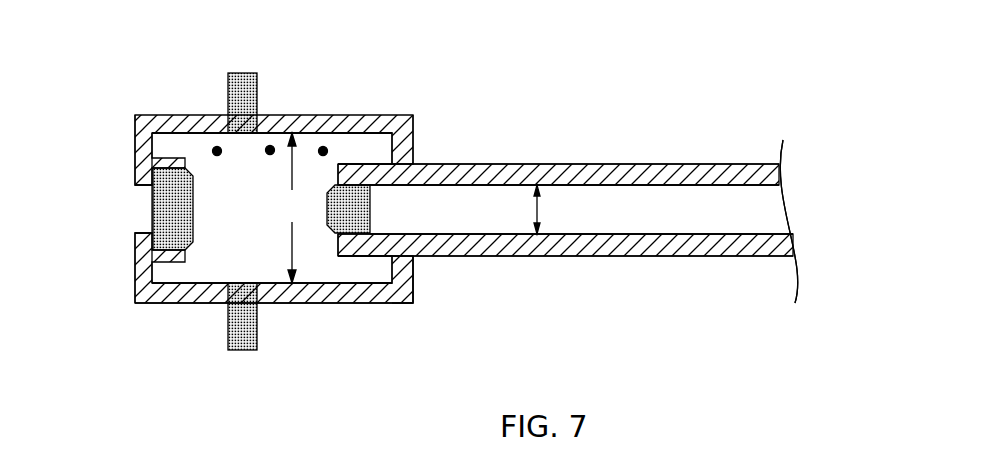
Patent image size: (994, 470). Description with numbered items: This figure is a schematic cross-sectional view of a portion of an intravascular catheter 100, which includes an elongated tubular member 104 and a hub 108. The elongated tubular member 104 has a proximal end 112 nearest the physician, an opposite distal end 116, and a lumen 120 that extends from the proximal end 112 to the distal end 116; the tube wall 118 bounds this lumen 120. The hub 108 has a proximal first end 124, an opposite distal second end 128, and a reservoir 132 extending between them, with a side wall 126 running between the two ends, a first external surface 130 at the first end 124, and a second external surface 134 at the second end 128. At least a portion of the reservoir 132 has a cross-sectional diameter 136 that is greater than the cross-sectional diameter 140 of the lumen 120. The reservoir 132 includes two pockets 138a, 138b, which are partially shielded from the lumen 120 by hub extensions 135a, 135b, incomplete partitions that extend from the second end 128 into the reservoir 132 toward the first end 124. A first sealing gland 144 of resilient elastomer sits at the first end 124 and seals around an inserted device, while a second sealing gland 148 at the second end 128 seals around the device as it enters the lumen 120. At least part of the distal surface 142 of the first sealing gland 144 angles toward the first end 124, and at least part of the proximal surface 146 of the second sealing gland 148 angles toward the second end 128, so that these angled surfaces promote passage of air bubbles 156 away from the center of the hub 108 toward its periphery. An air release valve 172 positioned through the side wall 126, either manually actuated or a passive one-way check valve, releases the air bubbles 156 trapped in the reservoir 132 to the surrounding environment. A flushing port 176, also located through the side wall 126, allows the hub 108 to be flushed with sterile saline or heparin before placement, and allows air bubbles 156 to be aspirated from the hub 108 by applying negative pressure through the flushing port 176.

The intravascular catheter 100 is at (552, 100).
The elongated tubular member 104 is at (597, 165).
The hub 108 is at (394, 115).
The proximal end 112 is at (415, 258).
The distal end 116 is at (744, 275).
The tube wall 118 is at (716, 163).
The lumen 120 is at (684, 224).
The first end 124 is at (135, 303).
The side wall 126 is at (313, 115).
The second end 128 is at (412, 303).
The first external surface 130 is at (135, 128).
The reservoir 132 is at (235, 200).
The second external surface 134 is at (413, 150).
The hub extension 135a is at (349, 259).
The hub extension 135b is at (352, 162).
The cross-sectional diameter 136 is at (293, 208).
The pocket 138a is at (360, 272).
The pocket 138b is at (364, 148).
The cross-sectional diameter 140 is at (556, 209).
The distal surface 142 is at (192, 236).
The first sealing gland 144 is at (152, 207).
The proximal surface 146 is at (334, 232).
The second sealing gland 148 is at (372, 212).
The air bubbles 156 is at (320, 149).
The air release valve 172 is at (258, 80).
The flushing port 176 is at (228, 325).